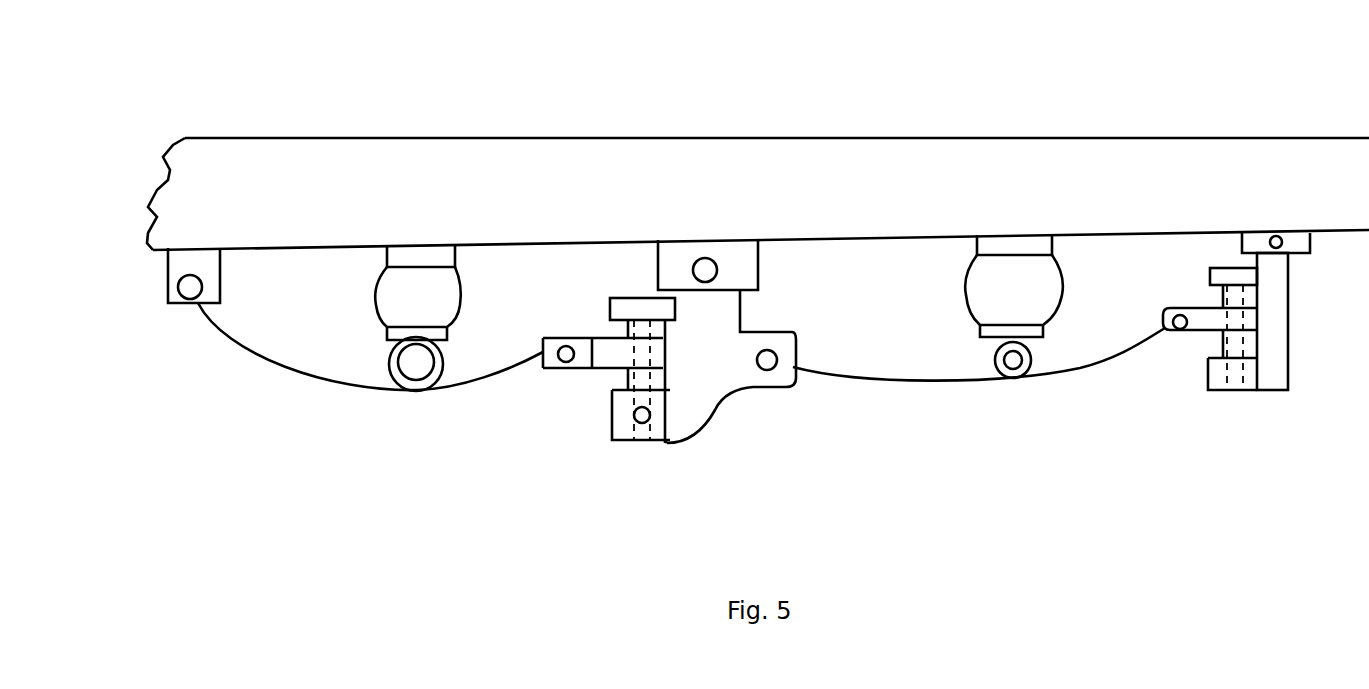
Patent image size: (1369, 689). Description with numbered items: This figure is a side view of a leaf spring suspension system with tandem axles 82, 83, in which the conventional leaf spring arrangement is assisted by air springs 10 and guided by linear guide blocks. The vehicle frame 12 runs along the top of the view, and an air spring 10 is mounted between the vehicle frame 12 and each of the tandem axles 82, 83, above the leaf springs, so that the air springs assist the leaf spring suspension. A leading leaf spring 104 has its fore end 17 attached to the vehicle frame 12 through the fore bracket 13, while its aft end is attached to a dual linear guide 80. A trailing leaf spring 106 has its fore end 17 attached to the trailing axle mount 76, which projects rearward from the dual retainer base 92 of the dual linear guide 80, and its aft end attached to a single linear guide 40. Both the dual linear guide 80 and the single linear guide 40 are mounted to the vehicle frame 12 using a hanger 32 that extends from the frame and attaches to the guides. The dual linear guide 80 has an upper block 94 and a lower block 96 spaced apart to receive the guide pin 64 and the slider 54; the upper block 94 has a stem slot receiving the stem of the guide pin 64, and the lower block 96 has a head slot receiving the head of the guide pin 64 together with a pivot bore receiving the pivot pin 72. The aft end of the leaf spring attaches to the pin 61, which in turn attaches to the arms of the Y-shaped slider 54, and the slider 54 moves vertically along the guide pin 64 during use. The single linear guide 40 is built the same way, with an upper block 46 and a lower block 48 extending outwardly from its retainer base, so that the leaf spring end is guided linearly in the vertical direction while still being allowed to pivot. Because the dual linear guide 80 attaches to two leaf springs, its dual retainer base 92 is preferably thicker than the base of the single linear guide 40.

The vehicle frame 12 is at (339, 160).
The fore bracket 13 is at (183, 263).
The air spring 10 is at (405, 295).
The tandem axle 82 is at (430, 383).
The leading leaf spring 104 is at (268, 353).
The guide pin 64 is at (630, 338).
The pin 61 is at (566, 345).
The slider 54 is at (642, 352).
The upper block 94 is at (623, 302).
The pivot pin 72 is at (630, 423).
The lower block 96 is at (660, 442).
The hanger 32 is at (723, 255).
The dual retainer base 92 is at (742, 407).
The trailing axle mount 76 is at (777, 383).
The dual linear guide 80 is at (703, 390).
The trailing leaf spring 106 is at (979, 357).
The fore end 17 is at (820, 368).
The tandem axle 83 is at (1013, 380).
The linear guide 40 is at (1278, 370).
The upper block 46 is at (1217, 268).
The lower block 48 is at (1218, 385).